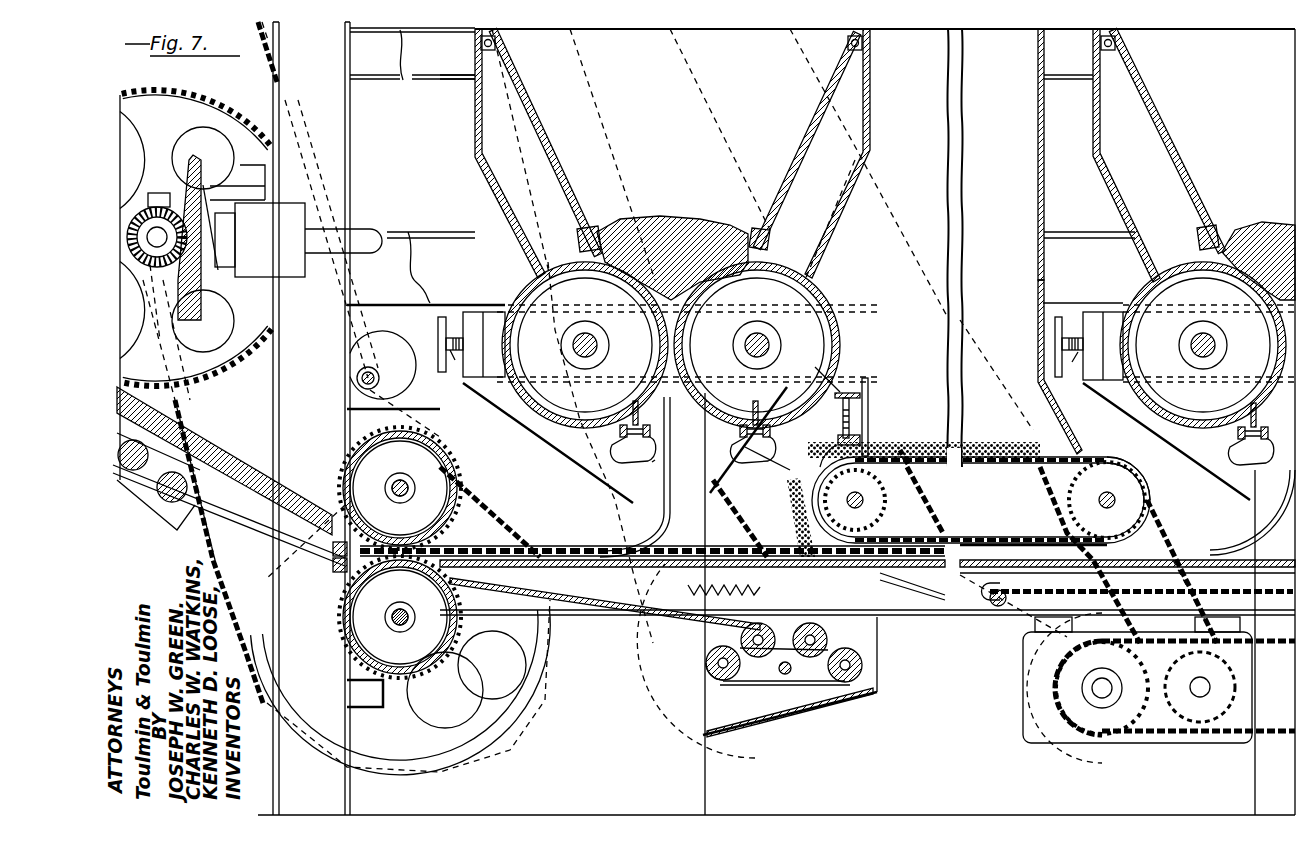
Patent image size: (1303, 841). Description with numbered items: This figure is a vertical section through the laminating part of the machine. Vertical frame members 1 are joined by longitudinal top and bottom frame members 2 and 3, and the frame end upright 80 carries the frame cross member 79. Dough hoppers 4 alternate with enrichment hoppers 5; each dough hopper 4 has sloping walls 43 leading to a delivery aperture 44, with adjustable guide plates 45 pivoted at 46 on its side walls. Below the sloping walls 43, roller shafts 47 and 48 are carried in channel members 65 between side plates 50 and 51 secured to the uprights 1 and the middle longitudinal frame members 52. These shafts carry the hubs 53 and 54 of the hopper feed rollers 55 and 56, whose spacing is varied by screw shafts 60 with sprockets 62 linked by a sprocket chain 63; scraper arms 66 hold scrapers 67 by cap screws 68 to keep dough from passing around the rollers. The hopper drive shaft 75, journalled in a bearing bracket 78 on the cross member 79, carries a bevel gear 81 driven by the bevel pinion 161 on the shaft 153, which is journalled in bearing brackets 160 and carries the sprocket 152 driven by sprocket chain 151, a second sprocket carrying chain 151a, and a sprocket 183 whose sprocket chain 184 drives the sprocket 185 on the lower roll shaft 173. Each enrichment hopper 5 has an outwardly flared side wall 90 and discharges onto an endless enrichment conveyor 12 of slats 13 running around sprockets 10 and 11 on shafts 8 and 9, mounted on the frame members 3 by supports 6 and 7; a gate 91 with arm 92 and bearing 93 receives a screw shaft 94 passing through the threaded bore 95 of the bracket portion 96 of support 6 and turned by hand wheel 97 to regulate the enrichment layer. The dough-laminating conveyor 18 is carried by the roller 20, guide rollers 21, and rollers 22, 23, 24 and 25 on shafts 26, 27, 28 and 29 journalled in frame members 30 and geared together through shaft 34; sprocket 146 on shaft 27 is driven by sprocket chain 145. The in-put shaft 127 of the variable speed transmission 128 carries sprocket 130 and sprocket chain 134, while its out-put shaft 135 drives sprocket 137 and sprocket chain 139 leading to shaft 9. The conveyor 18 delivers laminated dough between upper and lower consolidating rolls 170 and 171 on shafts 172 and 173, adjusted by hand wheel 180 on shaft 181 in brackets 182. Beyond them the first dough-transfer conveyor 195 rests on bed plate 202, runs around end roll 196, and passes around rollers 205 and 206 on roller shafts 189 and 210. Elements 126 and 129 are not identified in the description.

The vertical frame members 1 is at (1255, 770).
The longitudinal top frame members 2 is at (396, 80).
The longitudinal bottom frame members 3 is at (918, 614).
The dough hoppers 4 is at (474, 100).
The enrichment hoppers 5 is at (1045, 152).
The support 6 is at (820, 562).
The support 7 is at (1128, 546).
The shaft 8 is at (861, 500).
The shaft 9 is at (1112, 499).
The sprocket 10 is at (920, 492).
The sprocket 11 is at (1067, 490).
The endless enrichment conveyor 12 is at (1122, 458).
The slats 13 is at (1145, 478).
The dough-laminating conveyor 18 is at (1250, 578).
The roller 20 is at (470, 587).
The guide rollers 21 is at (1007, 598).
The roller 22 is at (741, 638).
The roller 23 is at (706, 665).
The roller 24 is at (827, 638).
The roller 25 is at (878, 653).
The shaft 26 is at (779, 668).
The shaft 27 is at (728, 681).
The roller shaft 28 is at (828, 666).
The roller shaft 29 is at (843, 698).
The frame members 30 is at (878, 684).
The shaft 34 is at (775, 683).
The sloping walls 43 is at (490, 186).
The delivery aperture 44 is at (655, 372).
The adjustable guide plates 45 is at (575, 196).
The pivot 46 is at (480, 45).
The roller shaft 47 is at (570, 345).
The roller shaft 48 is at (776, 338).
The side plate 50 is at (532, 432).
The side plate 51 is at (718, 494).
The middle longitudinal frame members 52 is at (435, 232).
The hub 53 is at (605, 341).
The hub 54 is at (740, 340).
The hopper feed roller 55 is at (660, 350).
The hopper feed roller 56 is at (745, 345).
The screw shafts 60 is at (455, 360).
The sprockets 62 is at (450, 337).
The sprocket chain 63 is at (442, 317).
The channel members 65 is at (497, 303).
The scraper arms 66 is at (592, 452).
The scrapers 67 is at (941, 433).
The cap screws 68 is at (961, 473).
The hopper drive shaft 75 is at (365, 229).
The bearing bracket 78 is at (272, 240).
The frame cross member 79 is at (259, 165).
The frame end upright 80 is at (349, 150).
The bevel gear 81 is at (198, 171).
The outwardly flared side wall 90 is at (1060, 424).
The gate 91 is at (878, 432).
The arm 92 is at (855, 497).
The bearing 93 is at (835, 440).
The screw shaft 94 is at (862, 393).
The threaded bore 95 is at (815, 382).
The bracket portion 96 is at (818, 458).
The hand wheel 97 is at (822, 372).
The chain 126 is at (1030, 658).
The in-put shaft 127 is at (1090, 688).
The enrichment conveyor variable speed transmission 128 is at (1022, 722).
The chain 129 is at (932, 518).
The sprocket 130 is at (1118, 745).
The sprocket chain 134 is at (1180, 737).
The out-put shaft 135 is at (1200, 698).
The sprocket 137 is at (1240, 656).
The sprocket chain 139 is at (1178, 542).
The sprocket chain 145 is at (608, 506).
The sprocket 146 is at (686, 588).
The sprocket chain 151 is at (265, 63).
The chain 151a is at (186, 90).
The sprocket 152 is at (268, 72).
The shaft 153 is at (198, 136).
The bearing brackets 160 is at (157, 233).
The bevel pinion 161 is at (180, 318).
The upper consolidating roll 170 is at (400, 488).
The lower consolidating roll 171 is at (400, 617).
The shaft 172 is at (400, 497).
The shaft 173 is at (400, 608).
The hand wheel 180 is at (358, 356).
The shaft 181 is at (376, 348).
The brackets 182 is at (357, 388).
The sprocket 183 is at (160, 340).
The sprocket chain 184 is at (180, 413).
The sprocket 185 is at (540, 677).
The roller shaft 189 is at (168, 503).
The first dough-transfer conveyor 195 is at (280, 492).
The end roll 196 is at (330, 565).
The bed plate 202 is at (328, 547).
The roller 205 is at (200, 508).
The roller 206 is at (167, 433).
The roller shaft 210 is at (133, 472).